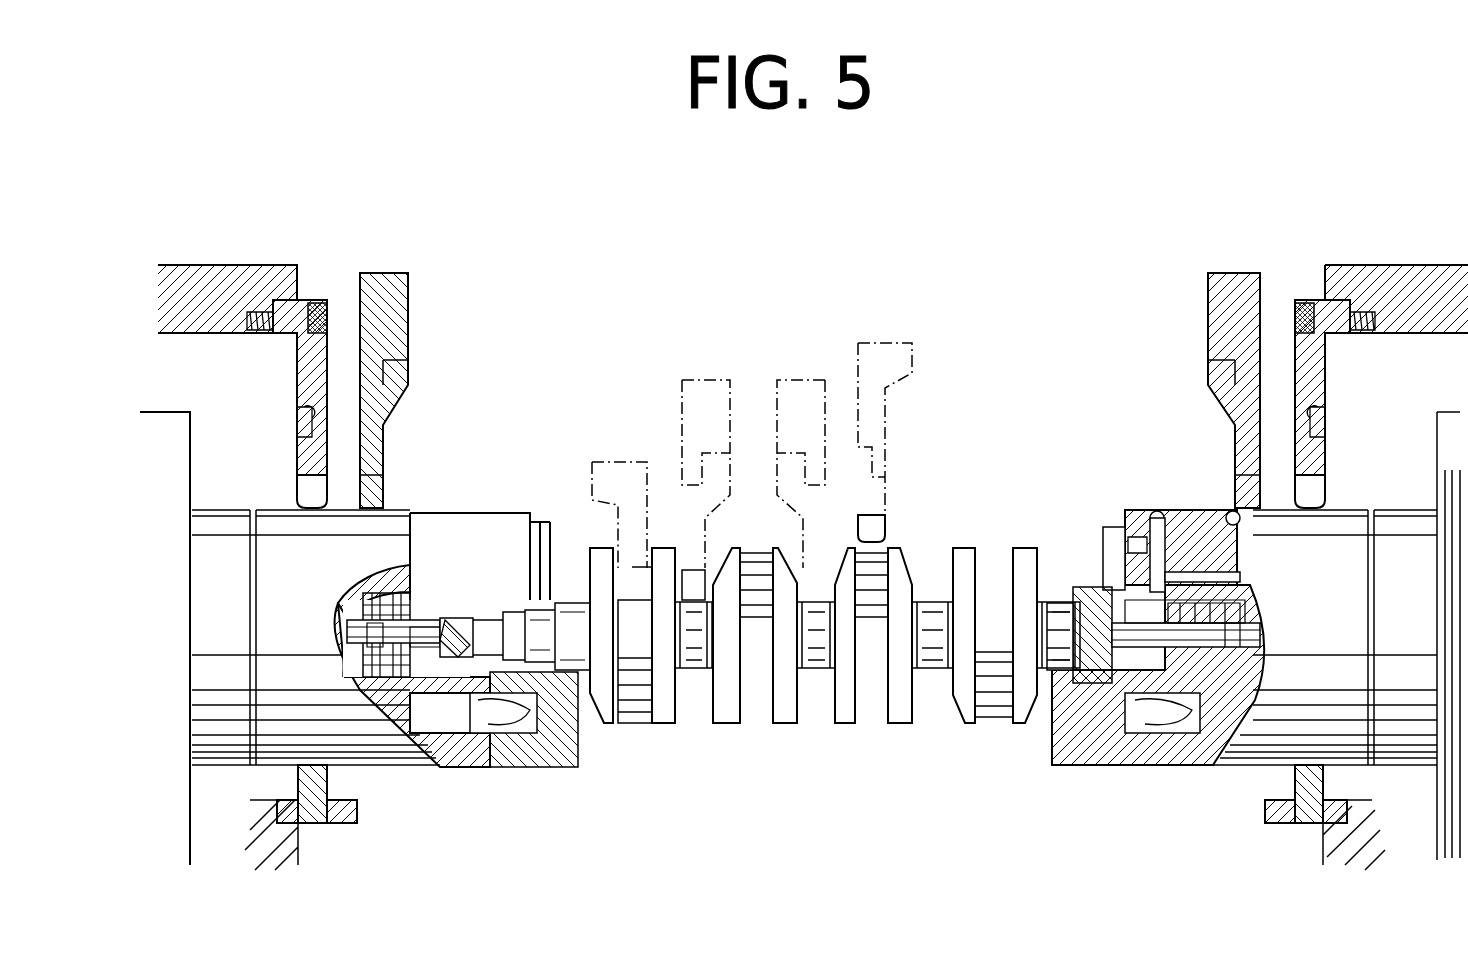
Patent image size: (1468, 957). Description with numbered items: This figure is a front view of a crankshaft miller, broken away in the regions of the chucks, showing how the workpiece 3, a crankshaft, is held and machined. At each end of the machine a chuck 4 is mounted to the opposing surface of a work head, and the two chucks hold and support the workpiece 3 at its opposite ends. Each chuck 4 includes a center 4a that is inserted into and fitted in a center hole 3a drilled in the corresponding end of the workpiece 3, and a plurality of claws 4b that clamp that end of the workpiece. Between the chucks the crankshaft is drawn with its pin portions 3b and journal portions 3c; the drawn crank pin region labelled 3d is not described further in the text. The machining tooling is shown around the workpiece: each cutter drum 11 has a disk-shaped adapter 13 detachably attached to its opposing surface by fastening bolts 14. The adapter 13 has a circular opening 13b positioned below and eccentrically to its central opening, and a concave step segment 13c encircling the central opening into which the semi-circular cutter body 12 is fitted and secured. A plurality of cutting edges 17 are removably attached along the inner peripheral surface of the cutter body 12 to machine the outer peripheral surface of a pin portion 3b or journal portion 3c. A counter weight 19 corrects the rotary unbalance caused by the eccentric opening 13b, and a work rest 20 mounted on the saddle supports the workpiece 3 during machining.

The workpiece 3 is at (835, 677).
The center hole 3a is at (455, 632).
The pin portion 3b is at (635, 723).
The journal portion 3c is at (693, 670).
The crank pin 3d is at (737, 725).
The chuck 4 is at (385, 768).
The center 4a is at (422, 635).
The claw 4b is at (580, 700).
The cutter drum 11 is at (200, 325).
The cutter body 12 is at (318, 452).
The adapter 13 is at (300, 372).
The circular opening 13b is at (330, 772).
The concave step segment 13c is at (305, 420).
The fastening bolt 14 is at (322, 302).
The cutting edge 17 is at (302, 490).
The counter weight 19 is at (342, 828).
The work rest 20 is at (410, 385).